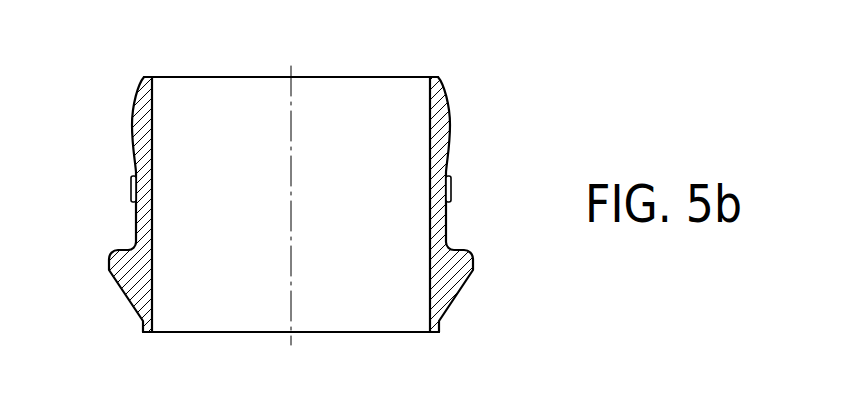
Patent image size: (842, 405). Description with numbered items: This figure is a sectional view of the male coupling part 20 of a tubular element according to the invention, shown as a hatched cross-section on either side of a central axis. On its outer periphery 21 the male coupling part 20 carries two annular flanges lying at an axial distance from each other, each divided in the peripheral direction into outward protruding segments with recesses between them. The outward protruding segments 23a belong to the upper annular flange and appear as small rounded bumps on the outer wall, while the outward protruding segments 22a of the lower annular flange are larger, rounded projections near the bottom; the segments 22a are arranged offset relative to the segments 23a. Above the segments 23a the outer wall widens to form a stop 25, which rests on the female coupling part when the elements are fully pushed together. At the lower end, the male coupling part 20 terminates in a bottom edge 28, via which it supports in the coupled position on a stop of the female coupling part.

The male coupling part 20 is at (129, 66).
The outer periphery 21 is at (441, 75).
The stop 25 is at (447, 129).
The outward protruding segments 23a is at (133, 190).
The outward protruding segments 22a is at (113, 262).
The bottom edge 28 is at (442, 337).